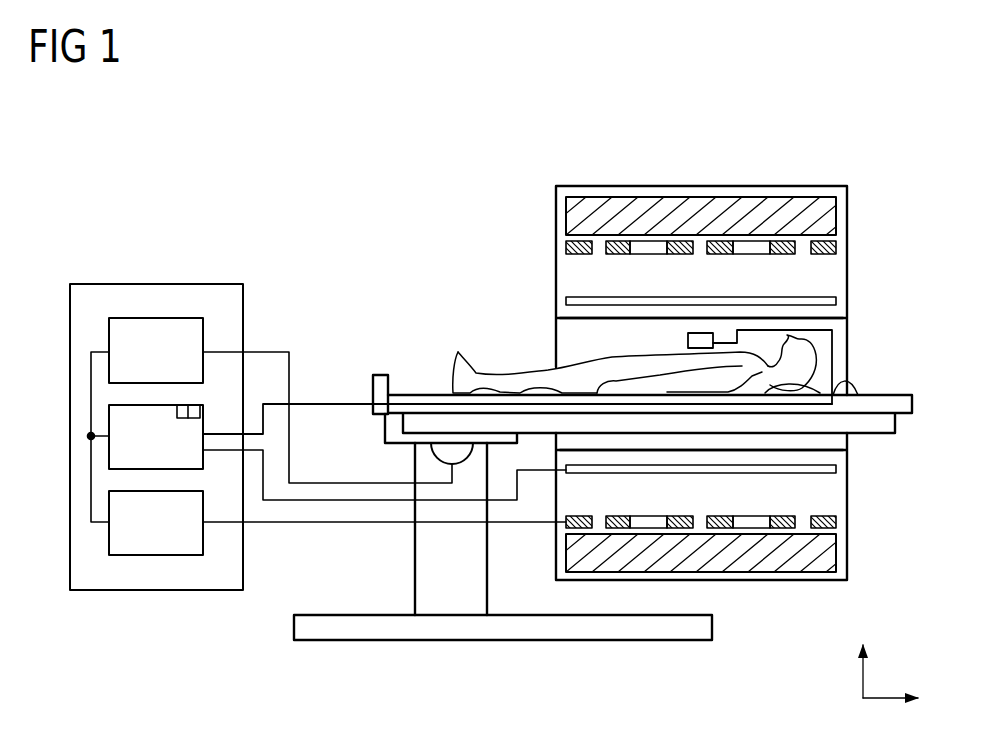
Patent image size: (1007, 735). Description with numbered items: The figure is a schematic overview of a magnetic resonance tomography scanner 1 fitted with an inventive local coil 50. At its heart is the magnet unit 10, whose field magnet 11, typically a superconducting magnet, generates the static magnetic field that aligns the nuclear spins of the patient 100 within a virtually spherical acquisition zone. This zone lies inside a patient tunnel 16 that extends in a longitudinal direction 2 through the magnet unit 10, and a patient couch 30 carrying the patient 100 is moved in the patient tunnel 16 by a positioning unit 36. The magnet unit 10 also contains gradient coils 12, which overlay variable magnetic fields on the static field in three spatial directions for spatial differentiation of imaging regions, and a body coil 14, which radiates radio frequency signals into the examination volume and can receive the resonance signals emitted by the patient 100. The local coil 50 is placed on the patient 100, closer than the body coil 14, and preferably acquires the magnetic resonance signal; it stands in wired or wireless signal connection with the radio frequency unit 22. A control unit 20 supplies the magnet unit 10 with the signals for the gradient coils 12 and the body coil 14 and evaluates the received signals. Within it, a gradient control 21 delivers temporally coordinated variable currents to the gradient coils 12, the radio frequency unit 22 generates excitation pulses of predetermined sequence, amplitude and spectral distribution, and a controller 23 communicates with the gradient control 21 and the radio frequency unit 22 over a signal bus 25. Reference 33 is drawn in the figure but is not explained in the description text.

The magnetic resonance tomography scanner 1 is at (505, 146).
The longitudinal direction 2 is at (893, 698).
The magnet unit 10 is at (841, 178).
The field magnet 11 is at (697, 207).
The gradient coils 12 is at (785, 240).
The body coil 14 is at (836, 300).
The patient tunnel 16 is at (870, 349).
The control unit 20 is at (231, 276).
The gradient control 21 is at (168, 541).
The radio frequency unit 22 is at (168, 453).
The controller 23 is at (168, 369).
The signal bus 25 is at (91, 389).
The patient couch 30 is at (533, 450).
The local coil with cable 33 is at (337, 403).
The positioning unit 36 is at (433, 464).
The local coil 50 is at (700, 333).
The patient 100 is at (487, 383).